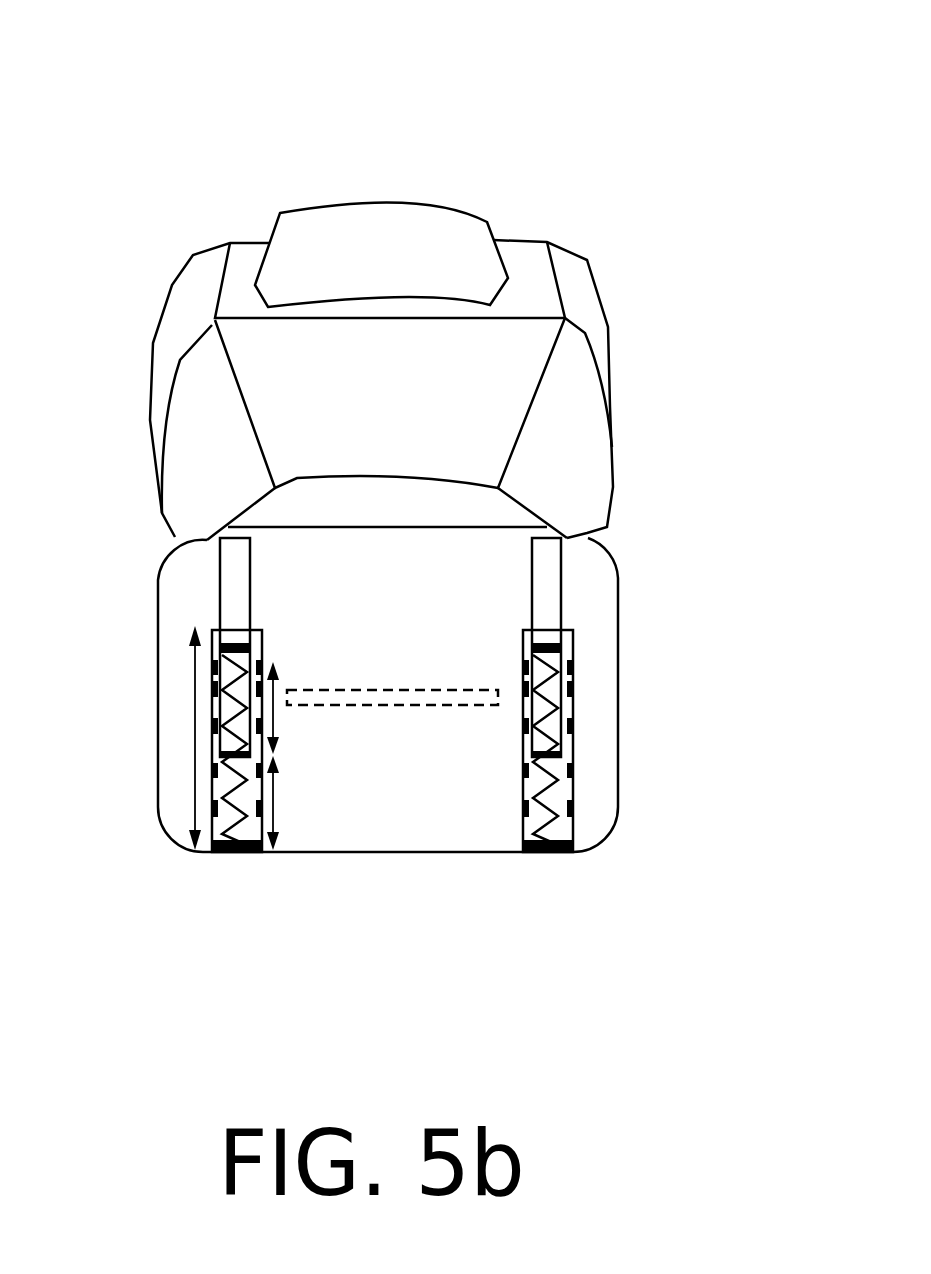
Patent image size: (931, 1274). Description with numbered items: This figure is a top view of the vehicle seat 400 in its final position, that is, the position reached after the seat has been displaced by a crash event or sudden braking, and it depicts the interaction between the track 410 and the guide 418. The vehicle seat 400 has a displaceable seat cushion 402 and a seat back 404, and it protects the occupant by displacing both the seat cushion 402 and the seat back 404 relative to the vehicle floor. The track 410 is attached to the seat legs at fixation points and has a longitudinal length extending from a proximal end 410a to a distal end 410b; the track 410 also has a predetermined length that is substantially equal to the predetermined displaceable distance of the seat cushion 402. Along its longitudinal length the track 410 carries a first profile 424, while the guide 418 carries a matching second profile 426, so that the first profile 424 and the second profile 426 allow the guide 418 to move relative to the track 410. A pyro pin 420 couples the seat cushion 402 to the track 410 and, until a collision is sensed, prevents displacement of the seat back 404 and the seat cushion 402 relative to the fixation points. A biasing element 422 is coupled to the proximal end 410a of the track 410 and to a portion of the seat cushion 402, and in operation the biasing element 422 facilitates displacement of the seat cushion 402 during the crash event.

The vehicle seat 400 is at (360, 88).
The seat cushion 402 is at (488, 852).
The seat back 404 is at (610, 347).
The track 410 is at (212, 852).
The proximal end 410a is at (223, 852).
The distal end 410b is at (217, 628).
The guide 418 is at (218, 600).
The pyro pin 420 is at (370, 705).
The biasing element 422 is at (570, 852).
The first profile 424 is at (572, 813).
The second profile 426 is at (563, 665).